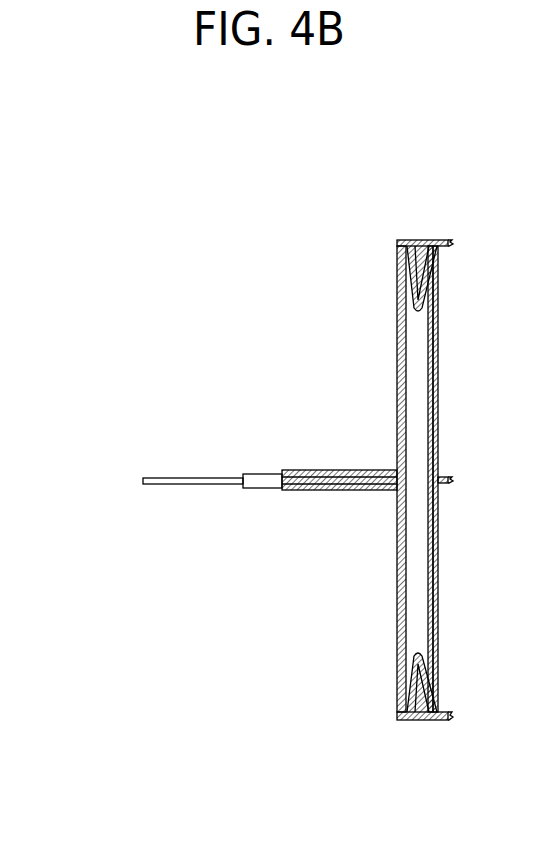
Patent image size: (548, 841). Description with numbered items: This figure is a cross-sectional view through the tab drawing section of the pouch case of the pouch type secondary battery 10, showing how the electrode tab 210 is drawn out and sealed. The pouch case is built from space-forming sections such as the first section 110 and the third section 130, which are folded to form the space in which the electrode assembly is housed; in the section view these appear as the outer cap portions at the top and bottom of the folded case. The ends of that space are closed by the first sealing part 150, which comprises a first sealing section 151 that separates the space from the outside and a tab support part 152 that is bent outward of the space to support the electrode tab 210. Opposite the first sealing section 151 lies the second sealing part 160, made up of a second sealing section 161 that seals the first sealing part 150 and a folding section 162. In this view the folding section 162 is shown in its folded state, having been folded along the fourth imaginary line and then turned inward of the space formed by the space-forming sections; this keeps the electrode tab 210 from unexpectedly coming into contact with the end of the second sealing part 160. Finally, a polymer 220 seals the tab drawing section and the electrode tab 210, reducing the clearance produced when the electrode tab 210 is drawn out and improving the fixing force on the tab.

The pouch type secondary battery 10 is at (69, 114).
The first section 110 is at (434, 238).
The third section 130 is at (419, 722).
The first sealing part 150 is at (297, 325).
The first sealing section 151 is at (400, 341).
The tab support part 152 is at (330, 468).
The second sealing part 160 is at (297, 578).
The second sealing section 161 is at (400, 592).
The folding section 162 is at (400, 633).
The electrode tab 210 is at (197, 475).
The polymer 220 is at (252, 490).